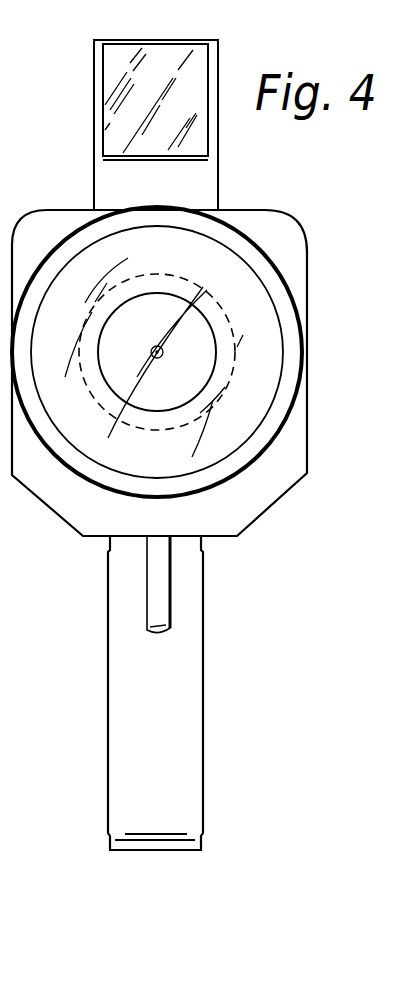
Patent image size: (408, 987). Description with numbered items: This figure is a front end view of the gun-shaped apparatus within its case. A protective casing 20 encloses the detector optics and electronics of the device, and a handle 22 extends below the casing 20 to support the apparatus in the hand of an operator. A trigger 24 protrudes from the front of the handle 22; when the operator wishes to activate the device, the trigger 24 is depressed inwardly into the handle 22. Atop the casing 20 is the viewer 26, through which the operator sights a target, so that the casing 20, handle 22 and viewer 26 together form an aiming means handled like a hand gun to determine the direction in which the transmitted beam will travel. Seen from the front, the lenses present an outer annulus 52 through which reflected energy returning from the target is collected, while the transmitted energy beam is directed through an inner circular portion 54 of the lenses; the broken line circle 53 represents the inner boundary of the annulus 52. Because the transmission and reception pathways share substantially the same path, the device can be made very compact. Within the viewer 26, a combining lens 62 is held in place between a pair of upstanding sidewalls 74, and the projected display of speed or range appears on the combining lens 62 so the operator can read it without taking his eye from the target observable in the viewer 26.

The protective casing 20 is at (267, 493).
The handle 22 is at (122, 703).
The trigger 24 is at (150, 590).
The viewer 26 is at (80, 129).
The outer annulus 52 is at (243, 295).
The broken line circle 53 is at (182, 275).
The inner circular portion 54 is at (107, 387).
The combining lens 62 is at (162, 62).
The upstanding sidewalls 74 is at (94, 77).